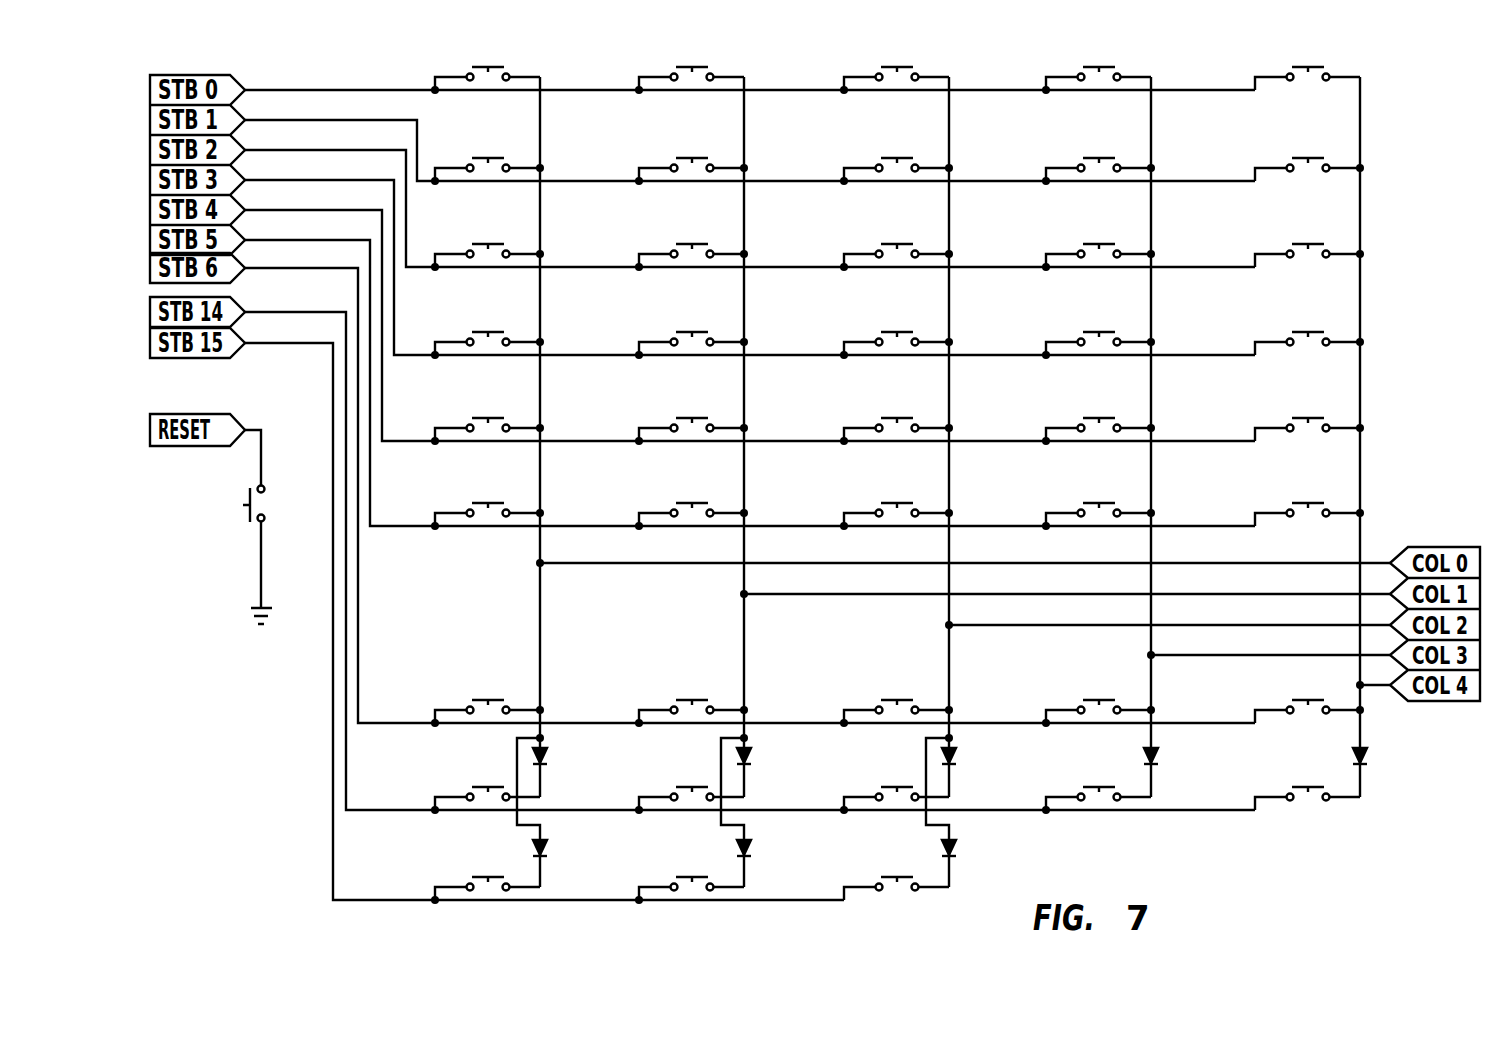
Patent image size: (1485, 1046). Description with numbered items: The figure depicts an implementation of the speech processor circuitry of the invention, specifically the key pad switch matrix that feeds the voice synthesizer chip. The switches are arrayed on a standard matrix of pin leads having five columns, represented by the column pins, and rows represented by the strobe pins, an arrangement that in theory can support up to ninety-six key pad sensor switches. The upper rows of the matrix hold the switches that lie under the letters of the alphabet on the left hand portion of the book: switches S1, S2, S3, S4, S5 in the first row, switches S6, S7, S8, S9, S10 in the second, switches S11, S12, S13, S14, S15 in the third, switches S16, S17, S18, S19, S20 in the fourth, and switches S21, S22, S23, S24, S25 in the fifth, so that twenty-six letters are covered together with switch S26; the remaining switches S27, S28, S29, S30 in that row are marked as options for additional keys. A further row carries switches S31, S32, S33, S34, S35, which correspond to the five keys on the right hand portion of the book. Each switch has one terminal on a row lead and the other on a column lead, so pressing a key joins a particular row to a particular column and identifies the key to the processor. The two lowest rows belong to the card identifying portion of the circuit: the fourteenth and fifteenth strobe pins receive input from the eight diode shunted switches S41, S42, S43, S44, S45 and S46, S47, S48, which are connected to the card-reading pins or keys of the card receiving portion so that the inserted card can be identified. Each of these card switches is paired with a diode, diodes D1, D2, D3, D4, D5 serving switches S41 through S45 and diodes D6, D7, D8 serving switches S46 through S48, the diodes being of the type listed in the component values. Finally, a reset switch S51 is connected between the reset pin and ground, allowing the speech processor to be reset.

The switch S1 is at (487, 80).
The switch S2 is at (691, 80).
The switch S3 is at (896, 80).
The switch S4 is at (1098, 80).
The switch S5 is at (1307, 80).
The switch S6 is at (487, 171).
The switch S7 is at (691, 171).
The switch S8 is at (896, 171).
The switch S9 is at (1098, 171).
The switch S10 is at (1307, 171).
The switch S11 is at (487, 257).
The switch S12 is at (691, 257).
The switch S13 is at (896, 257).
The switch S14 is at (1098, 257).
The switch S15 is at (1307, 257).
The switch S16 is at (487, 345).
The switch S17 is at (691, 345).
The switch S18 is at (896, 345).
The switch S19 is at (1098, 345).
The switch S20 is at (1307, 345).
The switch S21 is at (487, 431).
The switch S22 is at (691, 431).
The switch S23 is at (896, 431).
The switch S24 is at (1098, 431).
The switch S25 is at (1307, 431).
The switch S26 is at (487, 516).
The switch S27 is at (692, 516).
The switch S28 is at (897, 516).
The switch S29 is at (1099, 516).
The switch S30 is at (1307, 516).
The switch S31 is at (487, 713).
The switch S32 is at (691, 713).
The switch S33 is at (896, 713).
The switch S34 is at (1098, 713).
The switch S35 is at (1307, 713).
The diode shunted switch S41 is at (487, 801).
The diode shunted switch S42 is at (691, 801).
The diode shunted switch S43 is at (896, 801).
The diode shunted switch S44 is at (1098, 801).
The diode shunted switch S45 is at (1307, 801).
The diode shunted switch S46 is at (487, 893).
The diode shunted switch S47 is at (691, 893).
The diode shunted switch S48 is at (896, 893).
The reset switch S51 is at (282, 510).
The diode D1 is at (563, 751).
The diode D2 is at (767, 751).
The diode D3 is at (972, 751).
The diode D4 is at (1174, 751).
The diode D5 is at (1383, 751).
The diode D6 is at (564, 841).
The diode D7 is at (768, 841).
The diode D8 is at (973, 841).